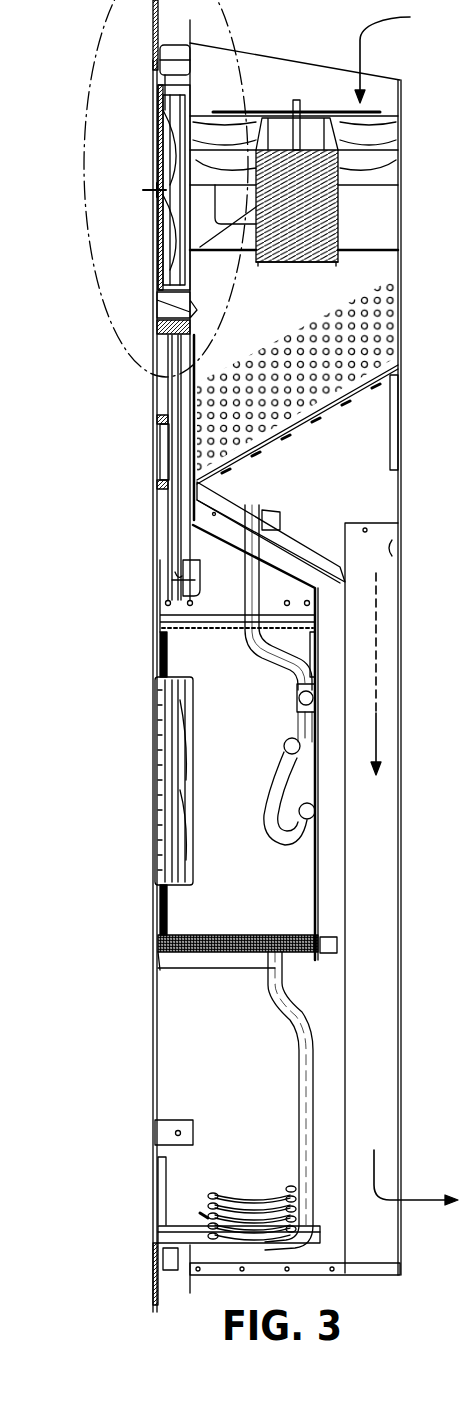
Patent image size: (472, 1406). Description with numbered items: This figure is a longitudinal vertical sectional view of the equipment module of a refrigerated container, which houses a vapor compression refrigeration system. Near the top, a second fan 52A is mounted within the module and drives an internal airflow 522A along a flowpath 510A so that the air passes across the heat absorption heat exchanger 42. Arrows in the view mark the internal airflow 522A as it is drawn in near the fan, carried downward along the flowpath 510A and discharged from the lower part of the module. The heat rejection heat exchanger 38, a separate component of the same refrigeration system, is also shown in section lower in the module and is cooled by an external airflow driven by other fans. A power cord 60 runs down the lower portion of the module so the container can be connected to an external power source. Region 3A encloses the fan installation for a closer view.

The fan assembly detail region 3A is at (120, 25).
The internal airflow 522A is at (367, 62).
The second fan 52A is at (371, 220).
The heat absorption heat exchanger 42 is at (352, 333).
The flowpath 510A is at (378, 674).
The heat rejection heat exchanger 38 is at (220, 952).
The power cord 60 is at (310, 1093).